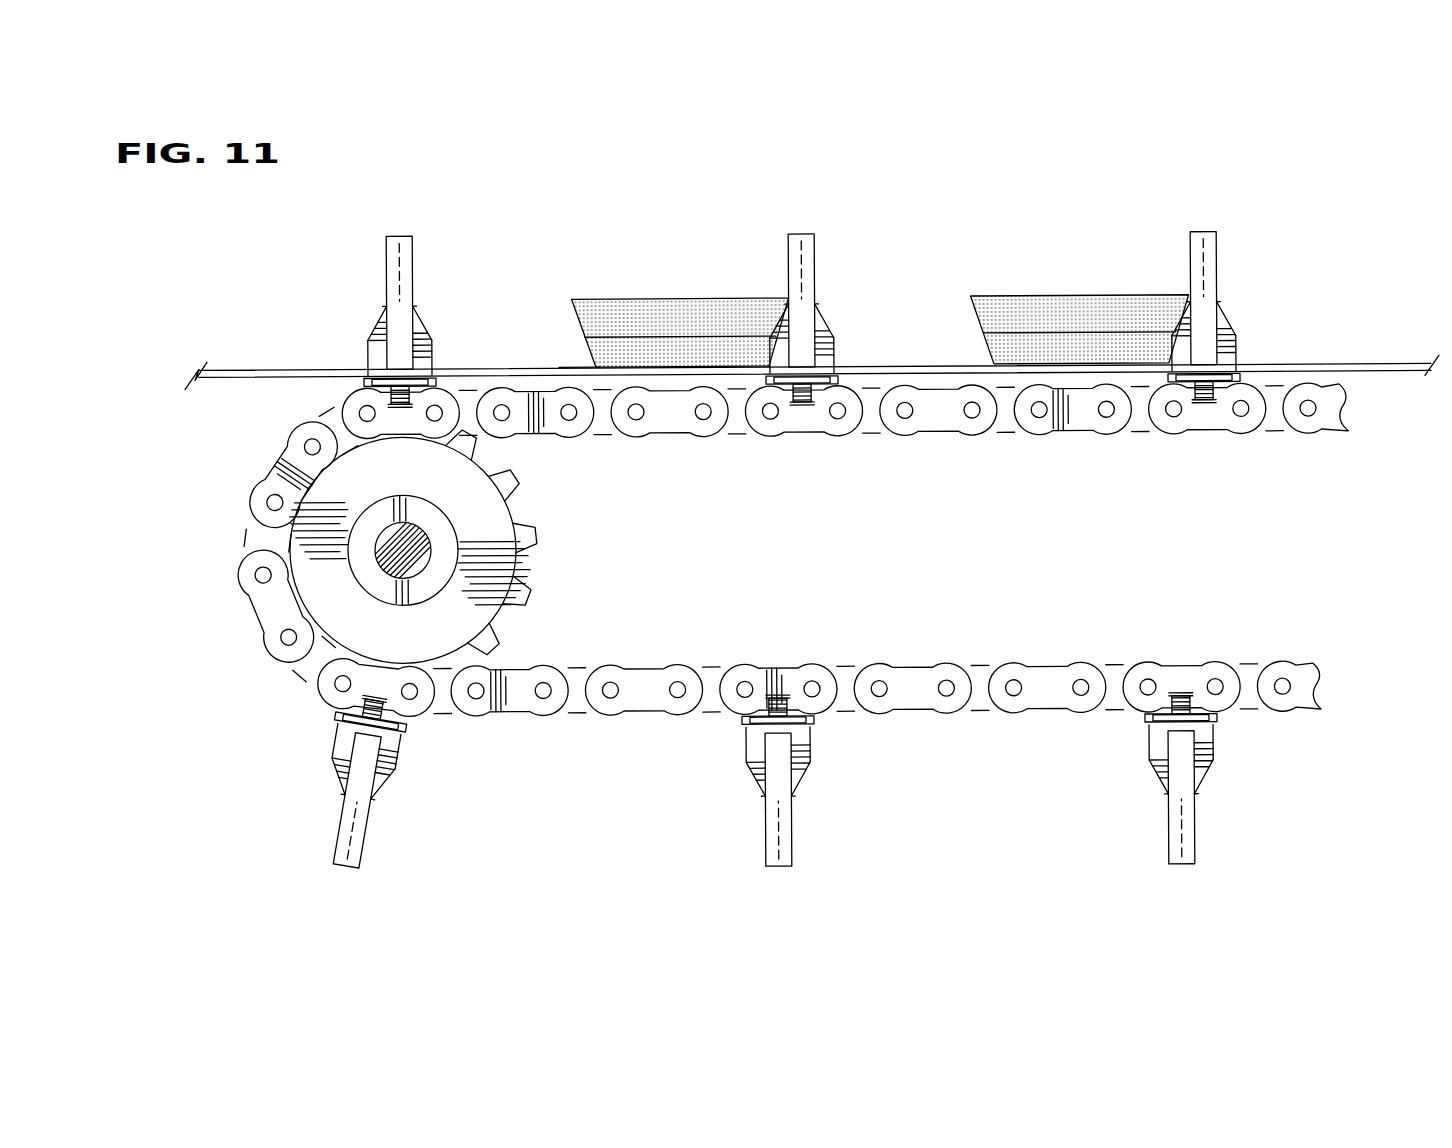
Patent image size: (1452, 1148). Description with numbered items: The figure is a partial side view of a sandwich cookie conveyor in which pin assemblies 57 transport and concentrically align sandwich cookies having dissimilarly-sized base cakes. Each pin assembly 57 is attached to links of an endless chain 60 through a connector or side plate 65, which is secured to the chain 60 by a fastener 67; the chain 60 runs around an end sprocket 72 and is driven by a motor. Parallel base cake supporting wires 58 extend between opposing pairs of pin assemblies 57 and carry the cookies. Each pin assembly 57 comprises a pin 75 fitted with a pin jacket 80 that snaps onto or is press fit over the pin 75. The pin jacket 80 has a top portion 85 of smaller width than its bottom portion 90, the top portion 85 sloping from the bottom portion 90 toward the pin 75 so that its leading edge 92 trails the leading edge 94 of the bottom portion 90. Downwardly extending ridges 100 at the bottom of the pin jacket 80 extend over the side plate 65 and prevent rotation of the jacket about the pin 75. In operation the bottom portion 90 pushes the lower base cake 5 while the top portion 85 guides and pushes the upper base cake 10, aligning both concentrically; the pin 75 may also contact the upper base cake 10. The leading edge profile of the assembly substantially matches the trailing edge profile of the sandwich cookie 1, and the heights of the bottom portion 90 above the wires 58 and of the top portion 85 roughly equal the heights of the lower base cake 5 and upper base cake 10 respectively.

The sandwich cookie 1 is at (873, 269).
The lower base cake 5 is at (598, 364).
The upper base cake 10 is at (633, 315).
The pin assembly 57 is at (777, 507).
The base cake supporting wire 58 is at (228, 368).
The endless chain 60 is at (243, 567).
The connector or side plate 65 is at (421, 386).
The fastener 67 is at (806, 412).
The end sprocket 72 is at (318, 588).
The pin 75 is at (402, 234).
The pin jacket 80 is at (419, 318).
The top portion 85 is at (378, 318).
The bottom portion 90 is at (371, 358).
The leading edge of top portion 92 is at (384, 304).
The leading edge of bottom portion 94 is at (371, 336).
The ridge 100 is at (362, 383).